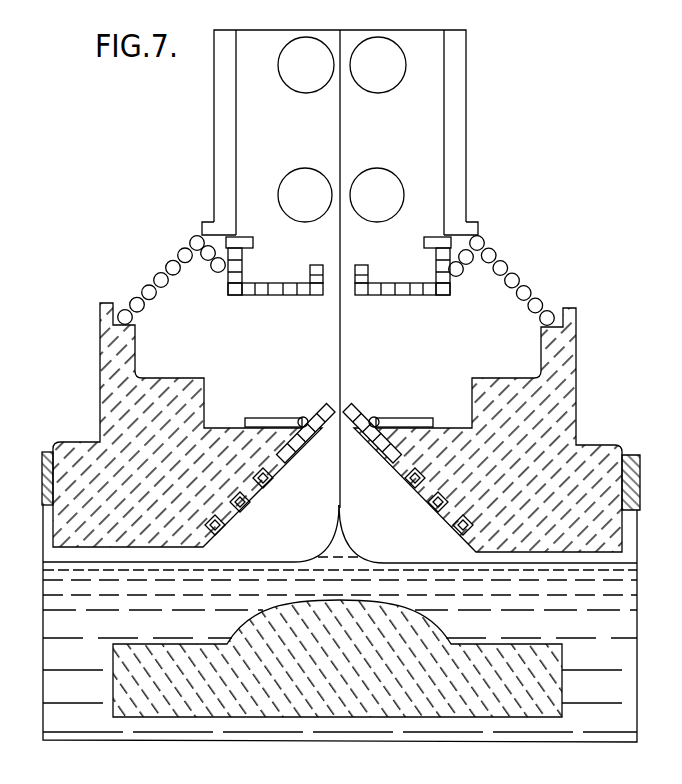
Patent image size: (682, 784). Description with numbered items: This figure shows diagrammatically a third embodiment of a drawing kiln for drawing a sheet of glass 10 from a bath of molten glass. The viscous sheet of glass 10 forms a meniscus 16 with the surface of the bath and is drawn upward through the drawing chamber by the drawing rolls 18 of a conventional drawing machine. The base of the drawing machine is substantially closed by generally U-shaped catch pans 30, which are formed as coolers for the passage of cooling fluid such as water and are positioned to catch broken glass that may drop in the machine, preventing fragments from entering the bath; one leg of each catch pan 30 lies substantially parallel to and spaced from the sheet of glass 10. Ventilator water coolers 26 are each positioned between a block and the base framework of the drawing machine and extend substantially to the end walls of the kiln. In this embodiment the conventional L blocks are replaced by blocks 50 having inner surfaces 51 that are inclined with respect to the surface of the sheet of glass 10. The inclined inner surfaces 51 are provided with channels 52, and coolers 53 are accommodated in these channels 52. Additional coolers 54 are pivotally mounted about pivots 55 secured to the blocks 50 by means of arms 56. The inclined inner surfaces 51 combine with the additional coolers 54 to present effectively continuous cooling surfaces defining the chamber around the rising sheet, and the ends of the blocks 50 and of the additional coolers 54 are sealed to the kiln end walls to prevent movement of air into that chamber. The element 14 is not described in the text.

The sheet of glass 10 is at (340, 320).
The base weight block 14 is at (458, 712).
The meniscus 16 is at (342, 528).
The drawing rolls 18 is at (313, 80).
The ventilator water coolers 26 is at (190, 248).
The catch pans 30 is at (388, 278).
The blocks 50 is at (160, 403).
The inner surfaces 51 is at (265, 484).
The channels 52 is at (247, 508).
The coolers 53 is at (223, 528).
The additional coolers 54 is at (347, 405).
The pivots 55 is at (302, 417).
The arms 56 is at (263, 421).